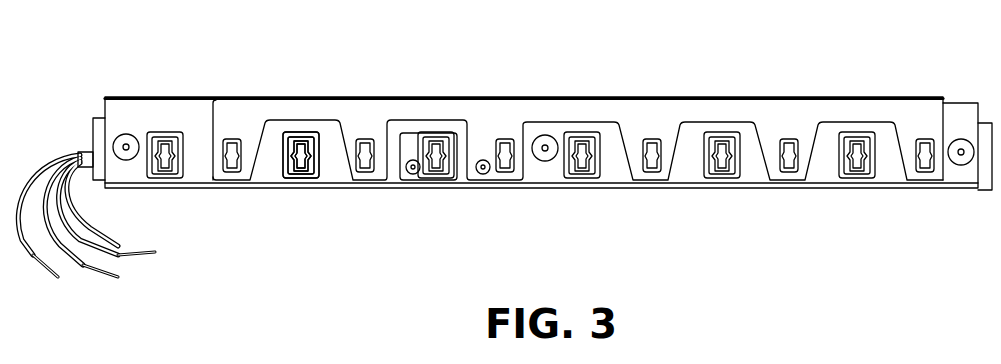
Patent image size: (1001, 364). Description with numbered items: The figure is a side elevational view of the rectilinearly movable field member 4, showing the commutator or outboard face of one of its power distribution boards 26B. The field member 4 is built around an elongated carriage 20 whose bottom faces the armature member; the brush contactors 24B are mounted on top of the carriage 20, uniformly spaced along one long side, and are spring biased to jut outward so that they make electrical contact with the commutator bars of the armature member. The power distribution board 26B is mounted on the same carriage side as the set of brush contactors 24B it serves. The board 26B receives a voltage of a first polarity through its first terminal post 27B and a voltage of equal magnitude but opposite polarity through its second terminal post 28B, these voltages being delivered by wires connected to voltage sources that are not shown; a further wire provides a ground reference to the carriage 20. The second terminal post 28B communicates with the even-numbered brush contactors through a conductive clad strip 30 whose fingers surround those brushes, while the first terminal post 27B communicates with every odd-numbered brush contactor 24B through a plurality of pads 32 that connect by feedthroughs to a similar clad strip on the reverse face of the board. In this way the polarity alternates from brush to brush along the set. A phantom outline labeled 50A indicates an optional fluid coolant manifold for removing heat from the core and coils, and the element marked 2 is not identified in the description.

The power cord 2 is at (0, 150).
The field member 4 is at (492, 84).
The carriage 20 is at (93, 123).
The brush contactor 24B is at (300, 140).
The power distribution board 26B is at (152, 98).
The terminal post 27B is at (413, 175).
The terminal post 28B is at (483, 177).
The clad strip 30 is at (573, 112).
The pads 32 is at (180, 174).
The fluid coolant manifold 50A is at (0, 291).